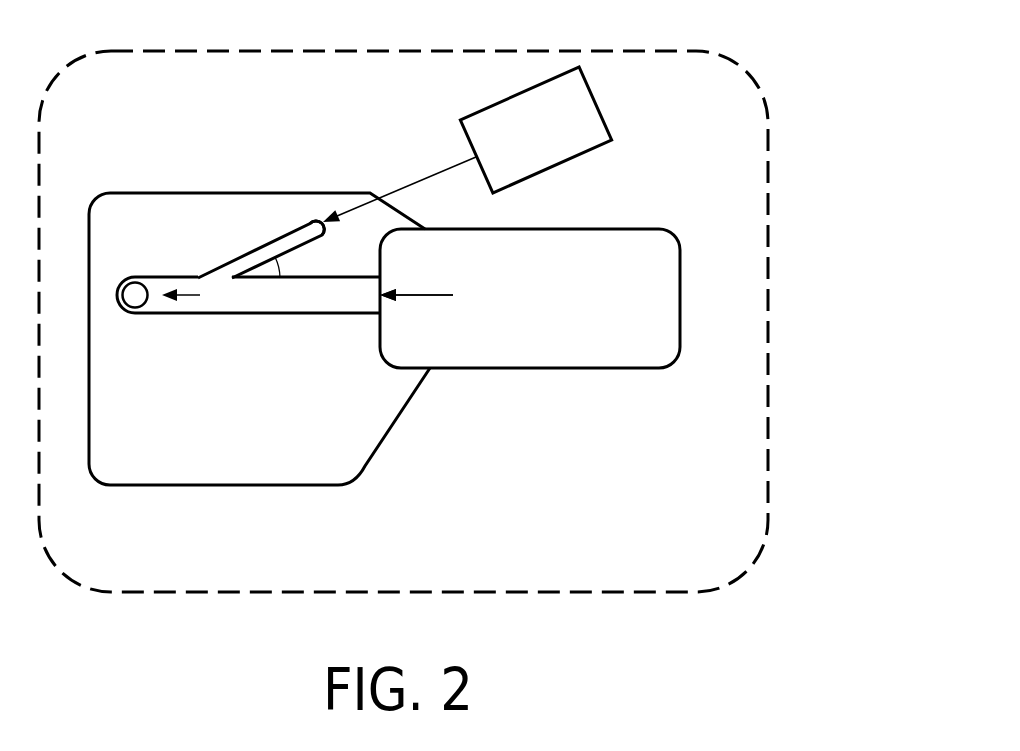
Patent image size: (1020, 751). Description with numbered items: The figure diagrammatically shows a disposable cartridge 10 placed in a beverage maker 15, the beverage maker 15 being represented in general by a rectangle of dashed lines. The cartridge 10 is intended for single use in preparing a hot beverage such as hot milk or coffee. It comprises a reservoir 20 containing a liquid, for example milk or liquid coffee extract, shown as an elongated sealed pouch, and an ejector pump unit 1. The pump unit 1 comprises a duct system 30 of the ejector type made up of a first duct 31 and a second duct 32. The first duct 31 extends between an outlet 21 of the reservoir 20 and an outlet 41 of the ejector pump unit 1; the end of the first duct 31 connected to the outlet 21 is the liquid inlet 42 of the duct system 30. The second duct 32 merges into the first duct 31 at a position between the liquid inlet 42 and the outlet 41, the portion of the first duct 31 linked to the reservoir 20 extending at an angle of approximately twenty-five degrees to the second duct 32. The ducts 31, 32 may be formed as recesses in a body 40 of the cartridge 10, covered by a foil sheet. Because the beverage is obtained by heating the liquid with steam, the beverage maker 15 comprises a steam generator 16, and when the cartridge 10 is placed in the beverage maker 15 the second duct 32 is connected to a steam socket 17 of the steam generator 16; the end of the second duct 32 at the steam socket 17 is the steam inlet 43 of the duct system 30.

The pump unit 1 is at (475, 483).
The disposable cartridge 10 is at (120, 161).
The beverage maker 15 is at (768, 395).
The steam generator 16 is at (600, 102).
The steam socket 17 is at (470, 157).
The reservoir 20 is at (680, 302).
The outlet 21 is at (442, 297).
The duct system 30 is at (206, 222).
The first duct 31 is at (295, 308).
The second duct 32 is at (287, 242).
The body 40 is at (395, 423).
The outlet 41 is at (137, 313).
The liquid inlet 42 is at (442, 297).
The steam inlet 43 is at (321, 220).